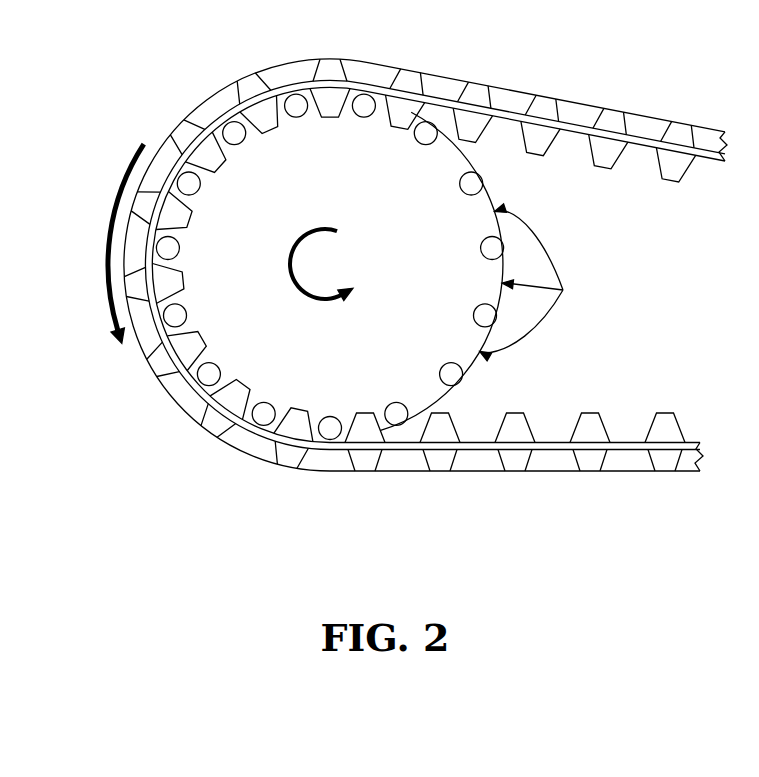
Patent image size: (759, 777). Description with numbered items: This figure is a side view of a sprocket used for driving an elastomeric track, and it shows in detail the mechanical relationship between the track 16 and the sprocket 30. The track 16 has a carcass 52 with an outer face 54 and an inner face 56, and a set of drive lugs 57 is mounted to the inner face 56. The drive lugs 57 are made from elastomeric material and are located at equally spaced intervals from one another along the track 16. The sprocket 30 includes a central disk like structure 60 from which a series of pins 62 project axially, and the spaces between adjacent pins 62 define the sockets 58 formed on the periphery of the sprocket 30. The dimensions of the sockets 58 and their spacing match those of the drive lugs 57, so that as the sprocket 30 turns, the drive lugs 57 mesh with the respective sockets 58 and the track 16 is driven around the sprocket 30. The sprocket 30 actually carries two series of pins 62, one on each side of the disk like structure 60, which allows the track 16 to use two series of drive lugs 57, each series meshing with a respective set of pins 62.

The track 16 is at (425, 262).
The sprocket 30 is at (262, 175).
The carcass 52 is at (572, 117).
The outer face 54 is at (583, 103).
The inner face 56 is at (577, 132).
The drive lugs 57 is at (677, 165).
The sockets 58 is at (539, 282).
The disk like structure 60 is at (434, 281).
The pins 62 is at (476, 184).